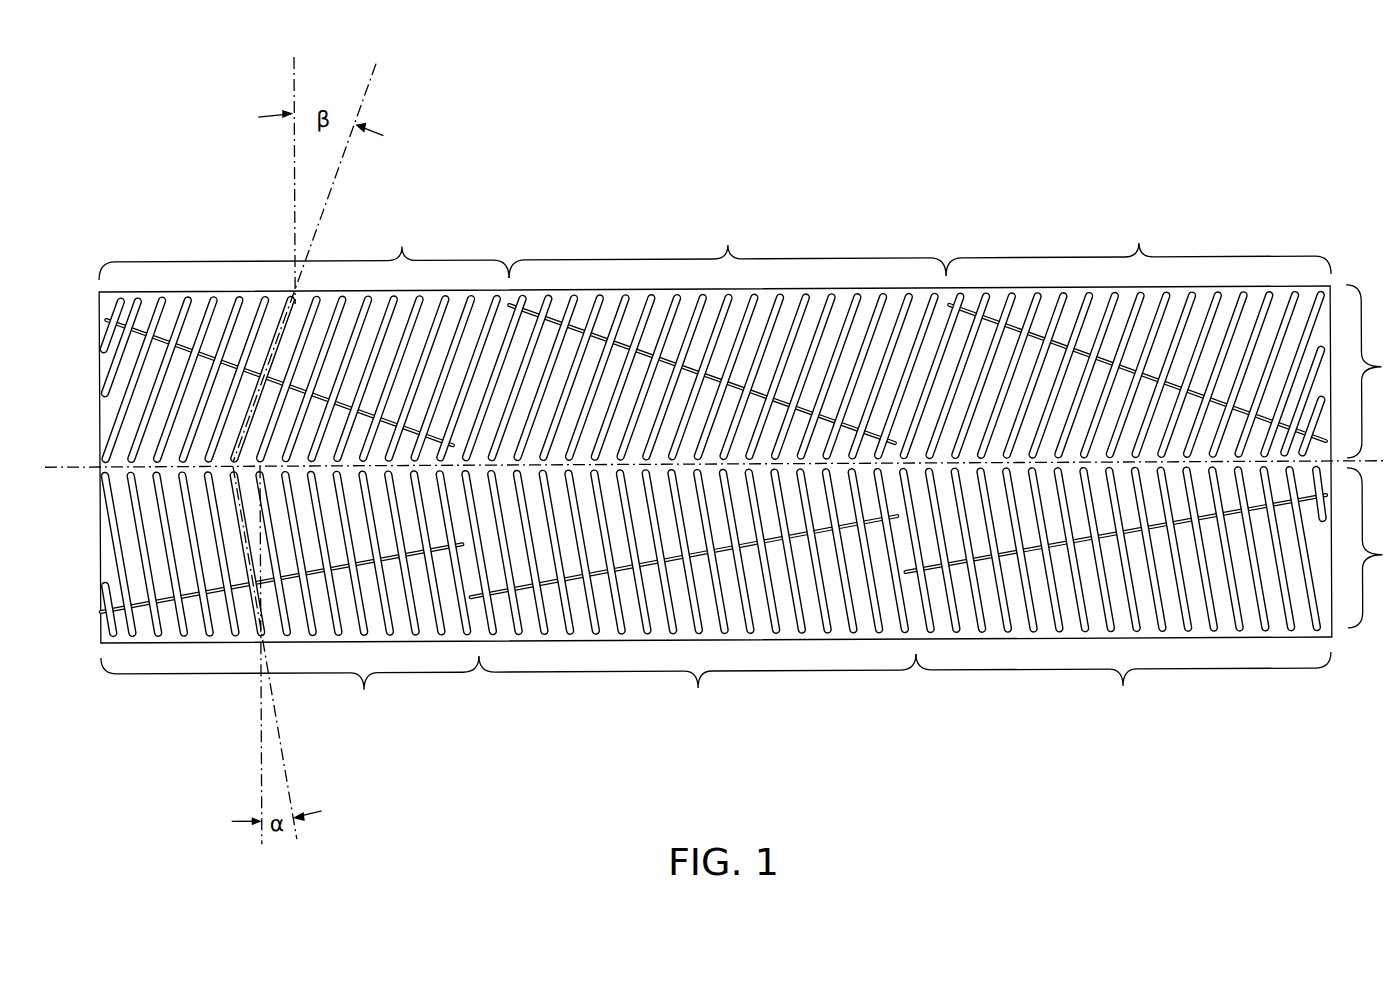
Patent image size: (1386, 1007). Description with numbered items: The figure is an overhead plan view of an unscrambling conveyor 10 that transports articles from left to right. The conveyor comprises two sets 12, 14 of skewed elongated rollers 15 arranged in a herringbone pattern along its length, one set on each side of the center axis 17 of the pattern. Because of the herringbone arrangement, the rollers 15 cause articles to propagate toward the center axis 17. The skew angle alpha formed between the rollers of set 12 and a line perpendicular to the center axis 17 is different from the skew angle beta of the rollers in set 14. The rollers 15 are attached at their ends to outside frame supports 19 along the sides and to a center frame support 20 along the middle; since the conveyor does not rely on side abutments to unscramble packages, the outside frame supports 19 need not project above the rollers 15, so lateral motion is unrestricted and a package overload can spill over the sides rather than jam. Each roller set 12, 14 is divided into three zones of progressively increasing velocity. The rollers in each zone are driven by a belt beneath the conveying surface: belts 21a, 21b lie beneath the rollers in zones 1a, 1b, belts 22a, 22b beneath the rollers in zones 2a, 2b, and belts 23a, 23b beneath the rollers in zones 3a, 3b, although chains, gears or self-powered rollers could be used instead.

The unscrambling conveyor 10 is at (1042, 100).
The set of skewed elongated rollers 12 is at (741, 562).
The set of skewed elongated rollers 14 is at (1351, 294).
The skewed elongated roller 15 is at (820, 314).
The center axis 17 is at (1380, 463).
The outside frame support 19 is at (1258, 314).
The center frame support 20 is at (1175, 642).
The belt 21a is at (170, 640).
The belt 21b is at (207, 312).
The belt 22a is at (557, 640).
The belt 22b is at (618, 308).
The belt 23a is at (965, 642).
The belt 23b is at (1050, 313).
The zone 1a is at (290, 689).
The zone 1b is at (304, 248).
The zone 2a is at (697, 688).
The zone 2b is at (727, 248).
The zone 3a is at (1123, 686).
The zone 3b is at (1138, 245).